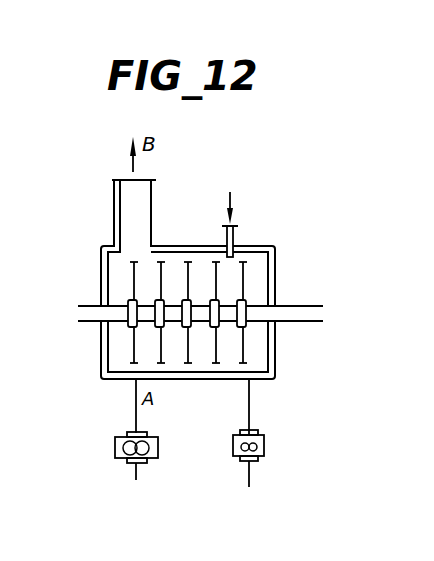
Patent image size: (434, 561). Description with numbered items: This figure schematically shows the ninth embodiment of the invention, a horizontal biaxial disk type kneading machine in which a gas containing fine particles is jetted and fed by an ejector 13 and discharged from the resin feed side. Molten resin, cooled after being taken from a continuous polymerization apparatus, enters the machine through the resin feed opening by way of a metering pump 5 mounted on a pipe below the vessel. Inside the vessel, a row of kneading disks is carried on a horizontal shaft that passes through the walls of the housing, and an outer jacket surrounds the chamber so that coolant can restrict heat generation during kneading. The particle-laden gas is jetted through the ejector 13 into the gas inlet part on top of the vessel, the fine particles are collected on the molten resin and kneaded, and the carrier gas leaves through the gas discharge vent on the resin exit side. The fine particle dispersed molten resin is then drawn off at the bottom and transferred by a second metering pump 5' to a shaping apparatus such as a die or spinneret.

The ejector 13 is at (234, 242).
The metering pump 5 is at (114, 456).
The metering pump 5' is at (265, 433).